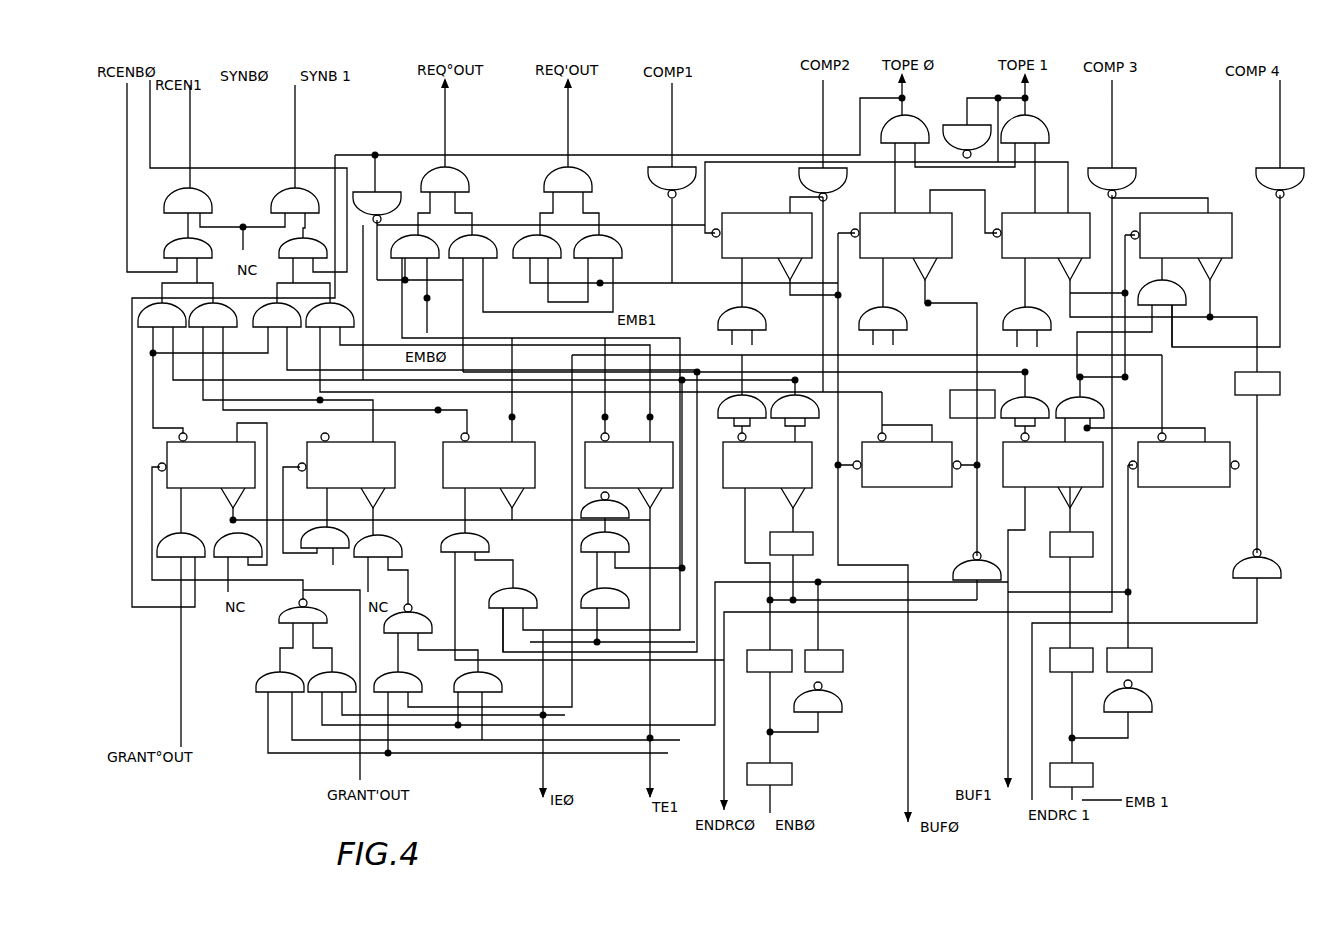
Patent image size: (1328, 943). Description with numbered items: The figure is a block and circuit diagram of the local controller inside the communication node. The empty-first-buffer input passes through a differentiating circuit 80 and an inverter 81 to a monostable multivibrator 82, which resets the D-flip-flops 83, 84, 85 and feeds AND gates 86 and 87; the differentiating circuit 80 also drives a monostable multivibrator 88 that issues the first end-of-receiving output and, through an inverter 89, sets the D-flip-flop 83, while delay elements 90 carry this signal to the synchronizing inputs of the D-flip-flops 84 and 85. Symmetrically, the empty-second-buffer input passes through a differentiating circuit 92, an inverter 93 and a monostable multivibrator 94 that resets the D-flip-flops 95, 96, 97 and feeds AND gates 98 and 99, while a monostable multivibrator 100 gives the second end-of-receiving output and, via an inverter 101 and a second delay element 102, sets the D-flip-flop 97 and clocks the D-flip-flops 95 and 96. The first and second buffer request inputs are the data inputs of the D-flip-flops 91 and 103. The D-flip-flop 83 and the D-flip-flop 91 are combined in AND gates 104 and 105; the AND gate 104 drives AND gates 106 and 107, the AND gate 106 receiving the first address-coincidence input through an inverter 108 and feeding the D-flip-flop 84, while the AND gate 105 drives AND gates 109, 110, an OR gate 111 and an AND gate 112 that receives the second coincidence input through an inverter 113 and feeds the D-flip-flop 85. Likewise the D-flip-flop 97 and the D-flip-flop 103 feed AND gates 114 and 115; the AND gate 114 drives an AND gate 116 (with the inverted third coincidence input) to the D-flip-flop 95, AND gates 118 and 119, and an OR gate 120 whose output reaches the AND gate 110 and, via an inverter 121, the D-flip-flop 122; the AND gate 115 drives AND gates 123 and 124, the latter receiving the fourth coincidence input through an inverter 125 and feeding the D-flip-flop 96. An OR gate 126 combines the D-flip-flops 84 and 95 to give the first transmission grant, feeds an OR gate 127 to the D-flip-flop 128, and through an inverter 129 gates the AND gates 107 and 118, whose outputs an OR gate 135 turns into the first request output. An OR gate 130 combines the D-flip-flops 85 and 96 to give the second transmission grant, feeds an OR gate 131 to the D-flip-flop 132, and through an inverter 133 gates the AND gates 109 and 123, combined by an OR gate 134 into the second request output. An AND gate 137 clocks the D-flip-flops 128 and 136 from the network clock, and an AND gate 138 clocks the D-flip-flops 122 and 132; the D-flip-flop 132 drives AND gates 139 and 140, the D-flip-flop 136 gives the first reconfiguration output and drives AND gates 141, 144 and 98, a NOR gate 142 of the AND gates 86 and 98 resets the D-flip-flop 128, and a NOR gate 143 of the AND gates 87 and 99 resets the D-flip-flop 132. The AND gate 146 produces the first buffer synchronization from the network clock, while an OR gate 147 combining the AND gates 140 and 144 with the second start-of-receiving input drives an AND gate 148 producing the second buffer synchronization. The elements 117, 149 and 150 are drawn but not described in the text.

The differentiating circuit 80 is at (769, 774).
The inverter 81 is at (818, 697).
The monostable multivibrator 82 is at (824, 661).
The D-flip-flop 83 is at (907, 472).
The D-flip-flop 84 is at (768, 212).
The D-flip-flop 85 is at (885, 214).
The AND gate 86 is at (280, 682).
The AND gate 87 is at (398, 682).
The monostable multivibrator 88 is at (769, 661).
The inverter 89 is at (977, 566).
The delay elements 90 is at (972, 404).
The D-flip-flop 91 is at (795, 452).
The differentiating circuit 92 is at (1071, 775).
The inverter 93 is at (1128, 696).
The monostable multivibrator 94 is at (1129, 660).
The D-flip-flop 95 is at (1026, 212).
The D-flip-flop 96 is at (1148, 212).
The D-flip-flop 97 is at (1184, 472).
The AND gate 98 is at (332, 682).
The AND gate 99 is at (478, 682).
The monostable multivibrator 100 is at (1071, 660).
The inverter 101 is at (1257, 564).
The second delay element 102 is at (1257, 383).
The D-flip-flop 103 is at (1053, 472).
The AND gate 104 is at (742, 406).
The AND gate 105 is at (795, 406).
The AND gate 106 is at (742, 318).
The AND gate 107 is at (415, 246).
The inverter 108 is at (672, 182).
The AND gate 109 is at (537, 246).
The AND gate 110 is at (605, 542).
The OR gate 111 is at (535, 600).
The AND gate 112 is at (883, 318).
The inverter 113 is at (823, 184).
The AND gate 114 is at (1025, 407).
The AND gate 115 is at (1080, 407).
The AND gate 116 is at (1027, 318).
The NAND gate 117 is at (1100, 174).
The AND gate 118 is at (473, 246).
The AND gate 119 is at (478, 540).
The OR gate 120 is at (605, 598).
The inverter 121 is at (605, 505).
The D-flip-flop 122 is at (635, 452).
The AND gate 123 is at (598, 246).
The AND gate 124 is at (1162, 292).
The inverter 125 is at (1268, 174).
The OR gate 126 is at (882, 134).
The OR gate 127 is at (170, 548).
The D-flip-flop 128 is at (232, 452).
The inverter 129 is at (377, 207).
The OR gate 130 is at (1050, 140).
The OR gate 131 is at (310, 545).
The D-flip-flop 132 is at (350, 452).
The inverter 133 is at (960, 128).
The OR gate 134 is at (560, 172).
The OR gate 135 is at (460, 175).
The D-flip-flop 136 is at (496, 452).
The AND gate 137 is at (228, 548).
The AND gate 138 is at (378, 546).
The AND gate 139 is at (213, 315).
The AND gate 140 is at (330, 315).
The AND gate 141 is at (162, 315).
The NOR gate 142 is at (322, 615).
The NOR gate 143 is at (392, 632).
The AND gate 144 is at (277, 315).
The AND gate 146 is at (188, 200).
The OR gate 147 is at (303, 248).
The AND gate 148 is at (295, 200).
The buffer 149 is at (791, 543).
The buffer 150 is at (1071, 544).